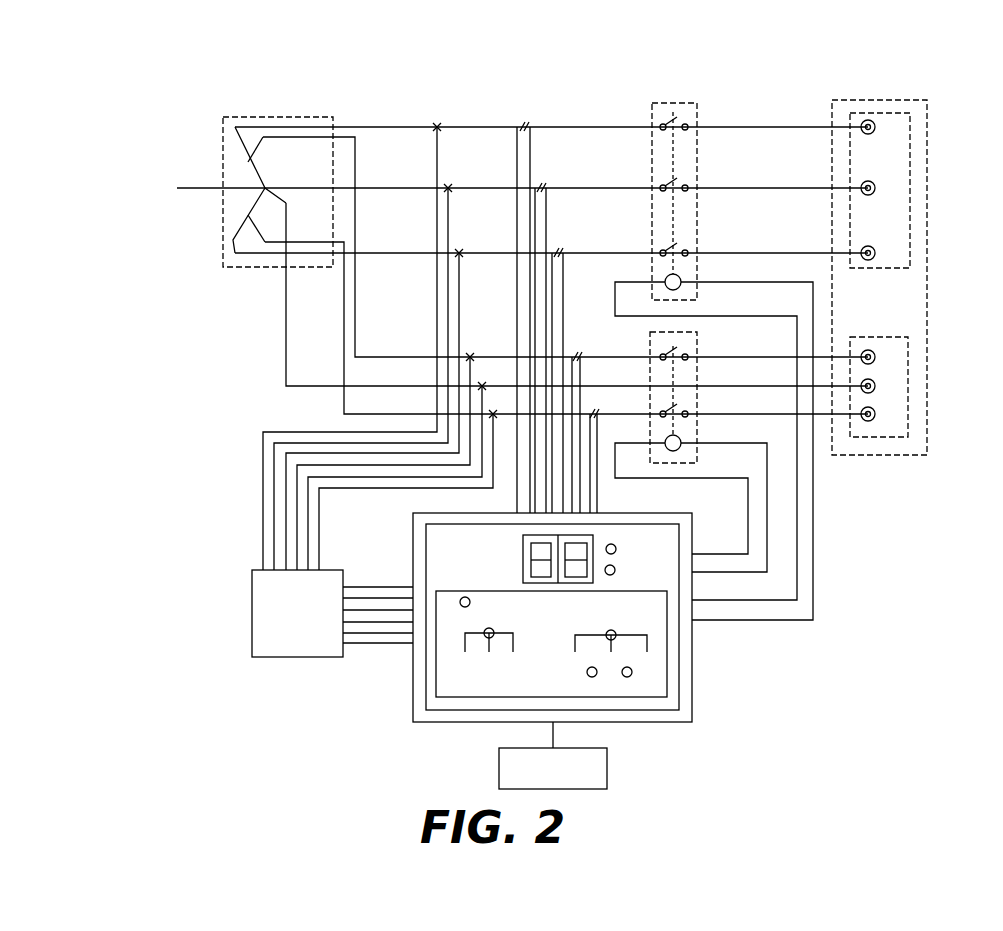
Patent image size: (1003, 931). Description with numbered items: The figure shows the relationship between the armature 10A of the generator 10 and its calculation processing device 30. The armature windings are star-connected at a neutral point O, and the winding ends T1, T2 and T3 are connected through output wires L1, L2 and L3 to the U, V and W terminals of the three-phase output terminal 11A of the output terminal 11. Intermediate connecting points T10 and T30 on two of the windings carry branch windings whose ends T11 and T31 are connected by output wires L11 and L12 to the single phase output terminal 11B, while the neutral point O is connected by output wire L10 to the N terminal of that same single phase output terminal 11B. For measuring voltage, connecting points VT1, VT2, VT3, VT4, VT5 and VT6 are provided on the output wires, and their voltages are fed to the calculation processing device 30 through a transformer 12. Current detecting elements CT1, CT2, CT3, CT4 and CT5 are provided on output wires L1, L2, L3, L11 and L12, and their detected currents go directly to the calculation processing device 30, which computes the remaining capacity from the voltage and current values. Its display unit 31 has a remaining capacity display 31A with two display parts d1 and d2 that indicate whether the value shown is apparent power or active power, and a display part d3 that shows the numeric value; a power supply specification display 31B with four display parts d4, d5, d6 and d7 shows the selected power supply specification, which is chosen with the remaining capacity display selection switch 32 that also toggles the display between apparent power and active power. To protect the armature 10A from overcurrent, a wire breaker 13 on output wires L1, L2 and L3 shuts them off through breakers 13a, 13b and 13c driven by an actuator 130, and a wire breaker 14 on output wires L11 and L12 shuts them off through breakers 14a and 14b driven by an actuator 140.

The generator 10 is at (562, 72).
The armature 10A is at (320, 117).
The neutral point O is at (199, 190).
The end of winding m1 T1 is at (235, 128).
The connecting point T10 is at (250, 162).
The connecting point T30 is at (248, 215).
The end of winding m3 T3 is at (233, 240).
The end of winding m4 T11 is at (262, 137).
The end of winding m2 T2 is at (322, 188).
The end of winding m5 T31 is at (257, 258).
The output wire L1 is at (604, 125).
The output wire L2 is at (604, 186).
The output wire L3 is at (604, 251).
The output wire L10 is at (286, 316).
The output wire L11 is at (357, 298).
The output wire L12 is at (344, 307).
The connecting point for voltage measurement VT1 is at (357, 338).
The connecting point for voltage measurement VT2 is at (375, 370).
The connecting point for voltage measurement VT3 is at (387, 402).
The connecting point for voltage measurement VT4 is at (398, 454).
The connecting point for voltage measurement VT5 is at (409, 469).
The connecting point for voltage measurement VT6 is at (420, 483).
The current detecting element CT1 is at (521, 310).
The current detecting element CT2 is at (549, 341).
The current detecting element CT3 is at (566, 374).
The current detecting element CT4 is at (588, 426).
The current detecting element CT5 is at (606, 455).
The wire breaker 13 is at (700, 103).
The breaker 13a is at (688, 124).
The breaker 13b is at (688, 185).
The breaker 13c is at (688, 250).
The actuator 130 is at (683, 278).
The wire breaker 14 is at (698, 333).
The breaker 14a is at (688, 354).
The breaker 14b is at (688, 411).
The actuator 140 is at (683, 439).
The output terminal 11 is at (925, 100).
The three-phase output terminal 11A is at (910, 138).
The single phase output terminal 11B is at (908, 362).
The transformer 12 is at (252, 612).
The calculation processing device 30 is at (694, 674).
The display unit 31 is at (682, 700).
The remaining capacity display 31A is at (692, 513).
The power supply specification display 31B is at (681, 646).
The display part d1 is at (612, 544).
The display part d2 is at (610, 565).
The display part d3 is at (527, 535).
The display part d4 is at (487, 640).
The display part d5 is at (617, 634).
The display part d6 is at (592, 677).
The display part d7 is at (627, 677).
The remaining capacity display selection switch 32 is at (608, 767).